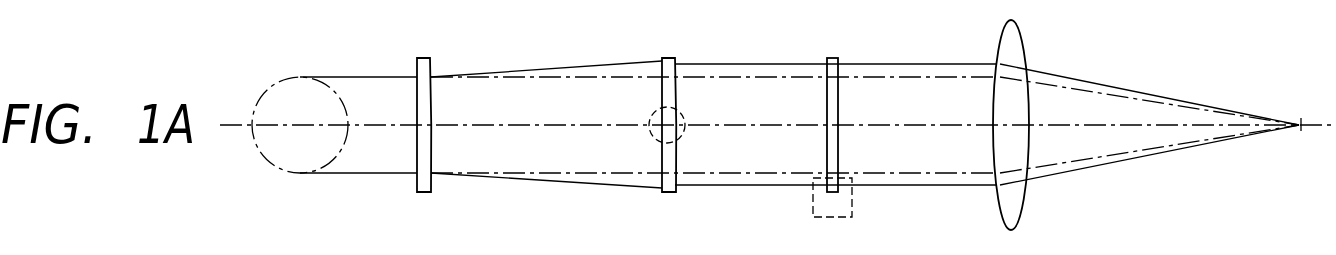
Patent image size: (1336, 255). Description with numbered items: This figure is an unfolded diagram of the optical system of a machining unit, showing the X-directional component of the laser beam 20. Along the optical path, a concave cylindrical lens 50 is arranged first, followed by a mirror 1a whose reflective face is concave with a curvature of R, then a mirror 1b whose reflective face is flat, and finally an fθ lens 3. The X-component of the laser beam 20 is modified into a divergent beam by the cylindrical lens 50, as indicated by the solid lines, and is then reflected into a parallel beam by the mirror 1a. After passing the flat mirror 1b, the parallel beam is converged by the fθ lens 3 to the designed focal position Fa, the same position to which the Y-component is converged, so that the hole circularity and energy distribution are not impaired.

The laser beam 20 is at (363, 75).
The concave cylindrical lens 50 is at (425, 57).
The mirror 1a is at (671, 57).
The mirror 1b is at (832, 57).
The fθ lens 3 is at (1018, 50).
The designed focal position Fa is at (1301, 122).